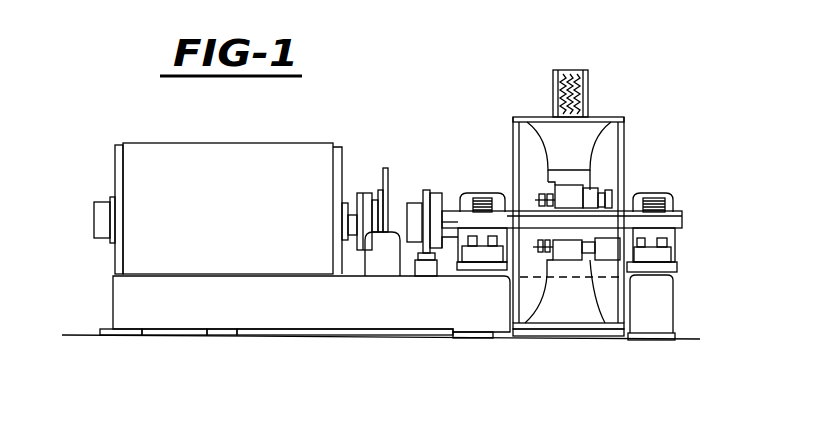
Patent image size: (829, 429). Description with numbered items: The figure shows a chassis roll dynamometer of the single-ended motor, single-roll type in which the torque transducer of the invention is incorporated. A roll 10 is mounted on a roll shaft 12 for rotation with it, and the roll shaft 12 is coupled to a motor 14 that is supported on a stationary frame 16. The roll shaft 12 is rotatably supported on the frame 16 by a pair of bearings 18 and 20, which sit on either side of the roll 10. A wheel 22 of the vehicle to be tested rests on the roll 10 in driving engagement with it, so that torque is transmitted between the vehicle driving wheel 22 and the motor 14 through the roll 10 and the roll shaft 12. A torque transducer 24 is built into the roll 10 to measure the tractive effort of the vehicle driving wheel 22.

The roll 10 is at (644, 113).
The roll shaft 12 is at (612, 202).
The motor 14 is at (173, 158).
The stationary frame 16 is at (108, 295).
The bearing 18 is at (679, 207).
The bearing 20 is at (465, 194).
The wheel 22 is at (589, 88).
The torque transducer 24 is at (548, 184).